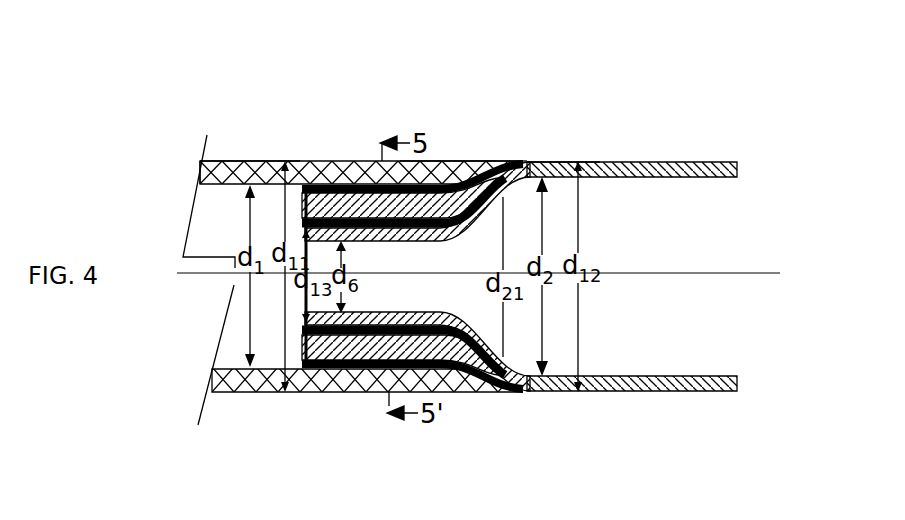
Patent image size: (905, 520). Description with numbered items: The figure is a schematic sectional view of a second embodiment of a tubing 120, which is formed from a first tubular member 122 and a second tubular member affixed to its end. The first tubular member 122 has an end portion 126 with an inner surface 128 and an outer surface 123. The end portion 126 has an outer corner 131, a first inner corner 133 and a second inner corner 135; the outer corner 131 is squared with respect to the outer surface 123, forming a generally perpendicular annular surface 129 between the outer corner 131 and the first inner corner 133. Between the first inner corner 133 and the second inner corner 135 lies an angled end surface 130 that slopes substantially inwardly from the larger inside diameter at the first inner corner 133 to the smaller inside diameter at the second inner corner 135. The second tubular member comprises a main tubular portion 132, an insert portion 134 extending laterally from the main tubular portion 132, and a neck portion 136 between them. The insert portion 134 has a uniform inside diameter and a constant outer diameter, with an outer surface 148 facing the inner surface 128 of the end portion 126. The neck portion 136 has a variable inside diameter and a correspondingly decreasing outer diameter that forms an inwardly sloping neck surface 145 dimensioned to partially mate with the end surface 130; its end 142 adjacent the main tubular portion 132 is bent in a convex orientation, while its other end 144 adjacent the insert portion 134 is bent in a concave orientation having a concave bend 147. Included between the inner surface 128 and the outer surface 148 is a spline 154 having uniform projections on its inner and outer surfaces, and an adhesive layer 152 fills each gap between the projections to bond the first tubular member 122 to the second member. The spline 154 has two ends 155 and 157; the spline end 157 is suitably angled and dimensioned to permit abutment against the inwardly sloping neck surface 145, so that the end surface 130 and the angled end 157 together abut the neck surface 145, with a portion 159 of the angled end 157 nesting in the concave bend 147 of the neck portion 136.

The tubing 120 is at (716, 118).
The first tubular member 122 is at (325, 161).
The outer surface 123 is at (312, 161).
The end portion 126 is at (437, 392).
The inner surface 128 is at (457, 161).
The annular surface 129 is at (543, 161).
The end surface 130 is at (497, 161).
The outer corner 131 is at (497, 161).
The main tubular portion 132 is at (670, 392).
The first inner corner 133 is at (593, 161).
The insert portion 134 is at (386, 313).
The second inner corner 135 is at (493, 161).
The neck portion 136 is at (483, 392).
The neck portion end 142 is at (547, 392).
The other end of neck portion 144 is at (455, 392).
The inwardly sloping neck surface 145 is at (458, 222).
The concave bend 147 is at (447, 238).
The outer surface 148 is at (288, 161).
The adhesive layer 152 is at (328, 392).
The spline 154 is at (307, 392).
The spline end 155 is at (288, 161).
The spline angled end 157 is at (482, 161).
The portion of angled end 159 is at (428, 161).